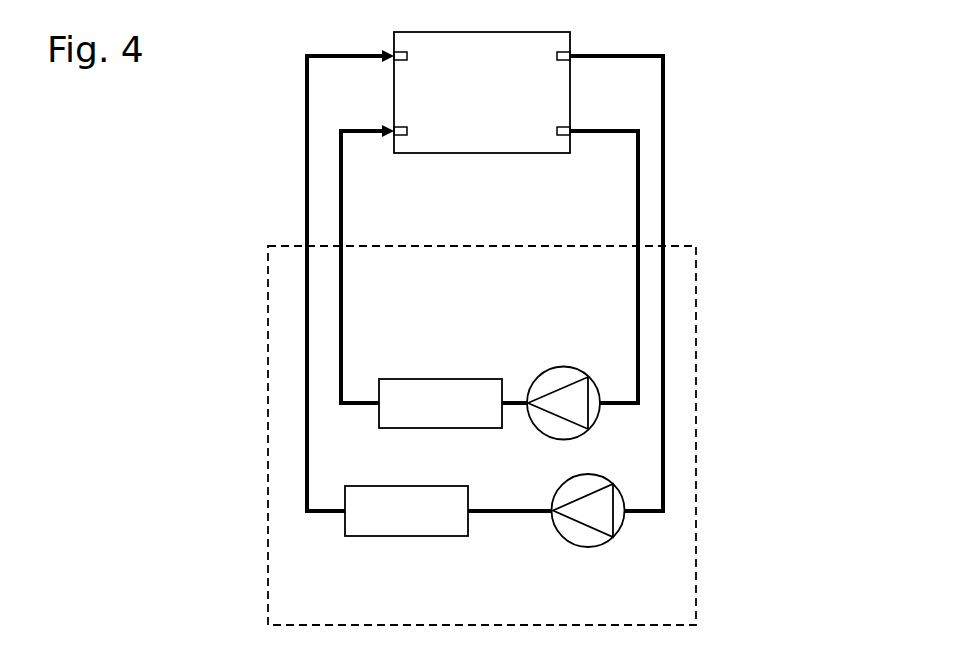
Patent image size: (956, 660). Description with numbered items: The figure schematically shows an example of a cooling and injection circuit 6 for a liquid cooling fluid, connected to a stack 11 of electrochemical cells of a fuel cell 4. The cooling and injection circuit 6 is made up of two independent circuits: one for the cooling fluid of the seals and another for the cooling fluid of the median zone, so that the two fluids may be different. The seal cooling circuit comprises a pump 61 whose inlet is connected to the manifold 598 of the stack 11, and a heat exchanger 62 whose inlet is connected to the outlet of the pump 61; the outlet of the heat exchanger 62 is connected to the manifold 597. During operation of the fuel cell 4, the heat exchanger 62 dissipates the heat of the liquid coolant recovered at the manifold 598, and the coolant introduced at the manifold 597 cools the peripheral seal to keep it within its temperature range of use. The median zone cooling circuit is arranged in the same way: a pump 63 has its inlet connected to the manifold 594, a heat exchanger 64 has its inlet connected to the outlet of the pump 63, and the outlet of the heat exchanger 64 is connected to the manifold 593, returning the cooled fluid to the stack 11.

The fuel cell 4 is at (741, 163).
The cooling and injection circuit 6 is at (706, 437).
The stack of electrochemical cells 11 is at (469, 105).
The pump 61 is at (563, 367).
The heat exchanger 62 is at (441, 378).
The pump 63 is at (587, 547).
The heat exchanger 64 is at (405, 537).
The manifold 593 is at (393, 52).
The manifold 594 is at (571, 52).
The manifold 597 is at (393, 127).
The manifold 598 is at (571, 127).